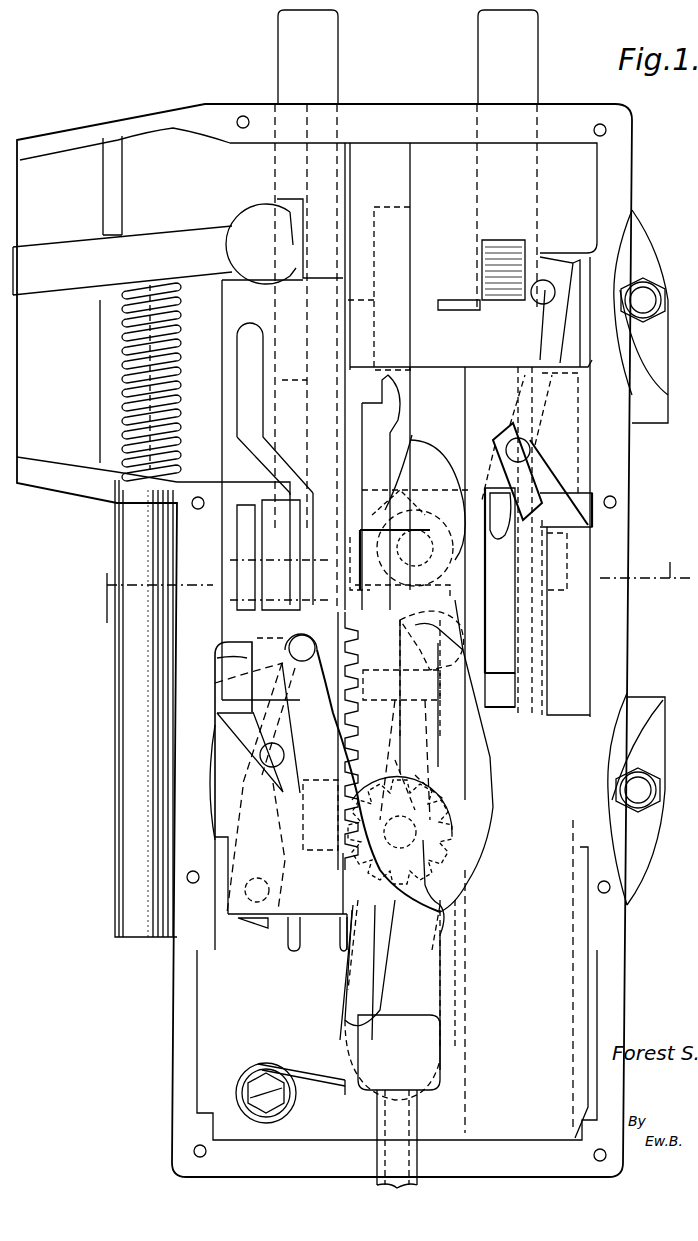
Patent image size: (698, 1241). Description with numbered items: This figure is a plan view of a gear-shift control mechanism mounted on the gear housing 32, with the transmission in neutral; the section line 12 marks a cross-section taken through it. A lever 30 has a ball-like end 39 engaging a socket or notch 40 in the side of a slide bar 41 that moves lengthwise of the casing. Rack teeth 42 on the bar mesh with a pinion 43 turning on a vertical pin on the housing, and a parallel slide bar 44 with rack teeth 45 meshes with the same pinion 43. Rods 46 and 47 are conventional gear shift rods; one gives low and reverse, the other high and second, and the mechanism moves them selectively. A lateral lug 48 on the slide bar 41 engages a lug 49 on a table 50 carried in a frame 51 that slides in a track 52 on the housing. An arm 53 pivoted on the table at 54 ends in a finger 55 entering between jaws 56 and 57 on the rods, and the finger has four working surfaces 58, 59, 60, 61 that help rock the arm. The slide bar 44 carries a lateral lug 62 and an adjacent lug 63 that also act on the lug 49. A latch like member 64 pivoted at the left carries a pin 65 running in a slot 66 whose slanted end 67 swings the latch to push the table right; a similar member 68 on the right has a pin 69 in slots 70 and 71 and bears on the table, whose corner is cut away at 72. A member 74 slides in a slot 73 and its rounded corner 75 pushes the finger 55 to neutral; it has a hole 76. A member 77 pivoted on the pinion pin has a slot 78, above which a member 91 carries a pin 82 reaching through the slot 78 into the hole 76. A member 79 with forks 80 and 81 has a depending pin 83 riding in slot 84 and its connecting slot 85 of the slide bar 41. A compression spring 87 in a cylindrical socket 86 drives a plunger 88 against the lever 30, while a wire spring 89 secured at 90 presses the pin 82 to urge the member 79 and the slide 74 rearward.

The section line 12 is at (389, 592).
The lever 30 is at (53, 252).
The gear housing 32 is at (612, 547).
The ball-like end 39 is at (255, 235).
The socket or notch 40 is at (298, 196).
The slide bar 41 is at (232, 302).
The rack teeth 42 is at (355, 760).
The pinion 43 is at (340, 867).
The slide bar 44 is at (501, 1001).
The rack teeth 45 is at (465, 900).
The rod 46 is at (482, 52).
The rod 47 is at (323, 57).
The lateral lug 48 is at (380, 376).
The lug 49 is at (443, 475).
The table 50 is at (410, 458).
The frame 51 is at (500, 684).
The track 52 is at (298, 573).
The arm 53 is at (316, 644).
The pivot 54 is at (440, 645).
The finger 55 is at (368, 563).
The jaws 56 is at (401, 479).
The jaws 57 is at (416, 464).
The working surface 58 is at (395, 560).
The working surface 59 is at (402, 584).
The working surface 60 is at (513, 541).
The working surface 61 is at (415, 547).
The lateral lug 62 is at (420, 680).
The lug 63 is at (402, 726).
The latch like member 64 is at (220, 838).
The pin 65 is at (260, 753).
The slot 66 is at (217, 658).
The slanting slot end 67 is at (242, 736).
The member 68 is at (540, 345).
The pin 69 is at (522, 447).
The slot 70 is at (550, 600).
The slot 71 is at (555, 480).
The arcuate cut-away portion 72 is at (493, 563).
The slot 73 is at (340, 998).
The member 74 is at (350, 965).
The rounded corner portion 75 is at (401, 686).
The hole 76 is at (392, 1057).
The member 77 is at (345, 945).
The slot 78 is at (372, 965).
The member 79 is at (425, 962).
The fork 80 is at (485, 808).
The fork 81 is at (323, 795).
The pin 82 is at (397, 1139).
The depending pin 83 is at (234, 682).
The slot 84 is at (262, 392).
The slot 85 is at (250, 457).
The cylindrical socket 86 is at (127, 562).
The compression spring 87 is at (128, 360).
The plunger 88 is at (112, 296).
The wire spring 89 is at (308, 1070).
The securing point 90 is at (258, 1080).
The member 91 is at (345, 1100).